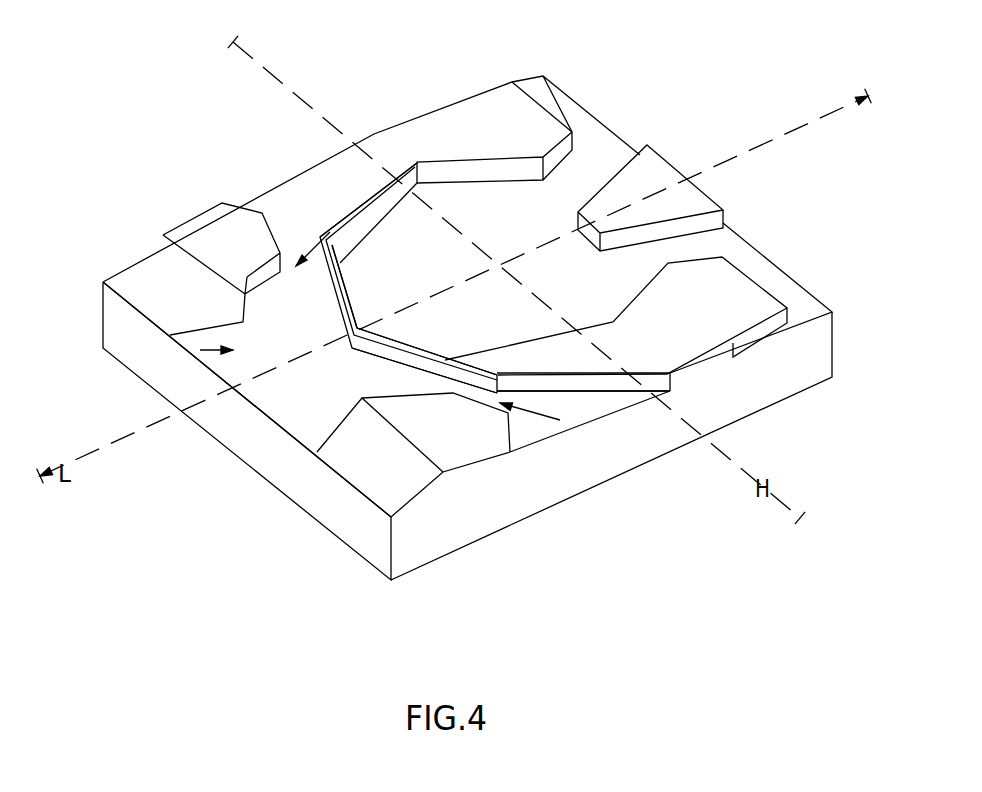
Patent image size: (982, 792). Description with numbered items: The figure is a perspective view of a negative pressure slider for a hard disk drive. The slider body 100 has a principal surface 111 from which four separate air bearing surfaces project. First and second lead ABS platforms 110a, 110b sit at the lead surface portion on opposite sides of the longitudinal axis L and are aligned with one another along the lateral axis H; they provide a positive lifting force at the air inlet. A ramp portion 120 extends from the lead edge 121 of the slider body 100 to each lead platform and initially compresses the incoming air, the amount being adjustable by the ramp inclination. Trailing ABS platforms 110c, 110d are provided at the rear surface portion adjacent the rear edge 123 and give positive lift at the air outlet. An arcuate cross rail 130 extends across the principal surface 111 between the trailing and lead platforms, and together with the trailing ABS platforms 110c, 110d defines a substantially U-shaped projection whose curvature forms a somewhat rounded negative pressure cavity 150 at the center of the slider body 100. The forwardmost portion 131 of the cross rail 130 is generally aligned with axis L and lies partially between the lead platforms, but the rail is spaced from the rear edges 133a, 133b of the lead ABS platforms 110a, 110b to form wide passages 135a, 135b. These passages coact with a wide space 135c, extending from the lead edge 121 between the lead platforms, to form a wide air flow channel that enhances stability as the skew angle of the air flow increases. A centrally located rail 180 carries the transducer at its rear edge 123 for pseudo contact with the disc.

The slider body 100 is at (312, 172).
The first lead ABS platform 110a is at (213, 237).
The second lead ABS platform 110b is at (443, 428).
The trailing ABS platform 110c is at (497, 132).
The trailing ABS platform 110d is at (717, 298).
The principal surface 111 is at (300, 417).
The ramp portion 120 is at (162, 282).
The lead edge 121 is at (362, 512).
The rear edge 123 is at (833, 340).
The arcuate cross rail 130 is at (343, 304).
The forwardmost portion of the cross rail 131 is at (353, 338).
The rear edge of lead ABS platform 133a is at (277, 228).
The rear edge of lead ABS platform 133b is at (492, 397).
The wide passage 135a is at (330, 232).
The wide passage 135b is at (560, 420).
The wide space 135c is at (200, 350).
The negative pressure cavity 150 is at (430, 295).
The centrally located rail 180 is at (657, 195).